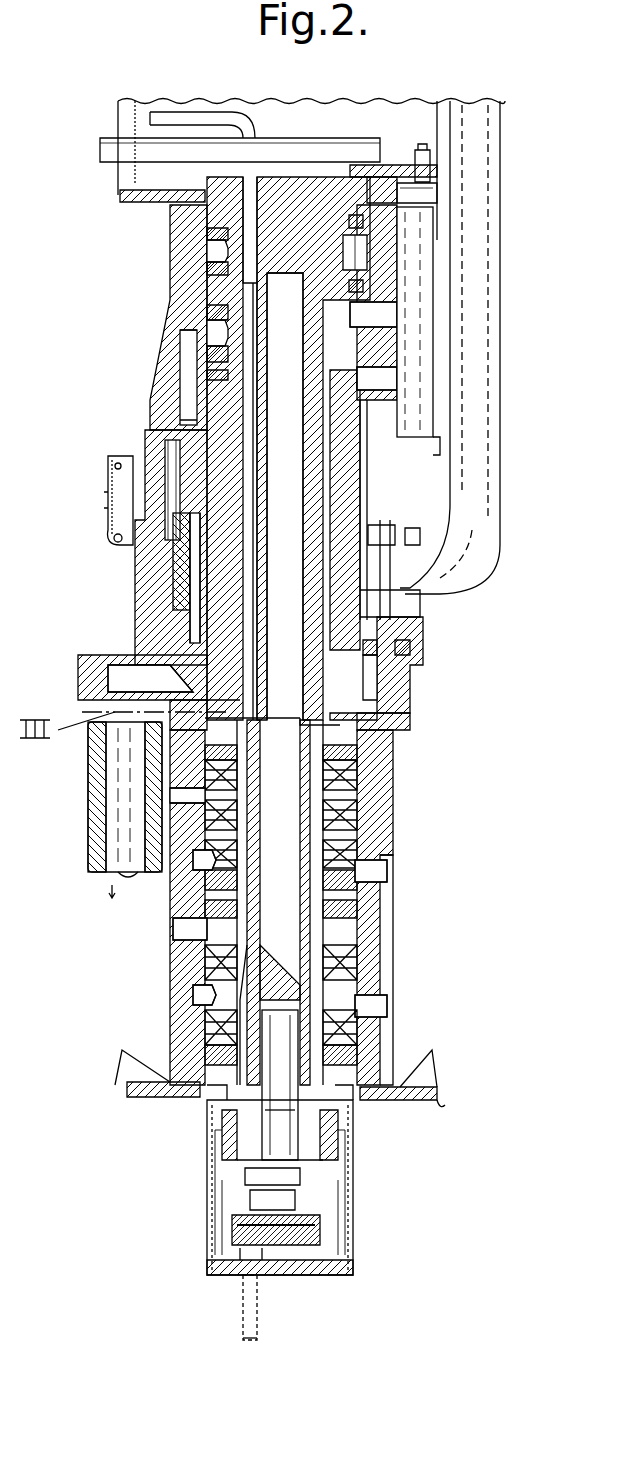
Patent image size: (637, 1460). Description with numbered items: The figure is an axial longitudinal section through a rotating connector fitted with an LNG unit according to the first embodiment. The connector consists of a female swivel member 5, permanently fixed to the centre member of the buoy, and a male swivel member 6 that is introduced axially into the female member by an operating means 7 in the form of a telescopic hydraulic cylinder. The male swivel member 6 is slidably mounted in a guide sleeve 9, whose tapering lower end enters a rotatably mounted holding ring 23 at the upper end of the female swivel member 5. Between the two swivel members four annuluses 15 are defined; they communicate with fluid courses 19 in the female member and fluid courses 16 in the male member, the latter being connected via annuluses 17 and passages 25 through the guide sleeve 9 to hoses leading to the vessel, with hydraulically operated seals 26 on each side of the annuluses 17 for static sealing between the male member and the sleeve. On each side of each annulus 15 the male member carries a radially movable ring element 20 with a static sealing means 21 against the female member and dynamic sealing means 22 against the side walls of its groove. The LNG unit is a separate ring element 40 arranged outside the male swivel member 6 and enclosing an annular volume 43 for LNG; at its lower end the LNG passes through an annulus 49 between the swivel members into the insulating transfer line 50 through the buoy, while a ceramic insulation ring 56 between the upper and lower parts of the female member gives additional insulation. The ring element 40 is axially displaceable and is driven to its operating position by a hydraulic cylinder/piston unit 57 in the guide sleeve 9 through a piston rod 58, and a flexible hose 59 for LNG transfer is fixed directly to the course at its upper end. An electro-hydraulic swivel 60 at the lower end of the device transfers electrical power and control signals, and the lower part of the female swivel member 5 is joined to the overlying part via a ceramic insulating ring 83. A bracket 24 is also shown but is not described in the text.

The female swivel member 5 is at (370, 934).
The male swivel member 6 is at (330, 348).
The operating means 7 is at (425, 283).
The guide sleeve 9 is at (165, 405).
The annuluses 15 is at (200, 866).
The fluid courses 16 is at (318, 808).
The annuluses 17 is at (212, 250).
The fluid courses 19 is at (372, 862).
The ring element 20 is at (355, 898).
The static sealing means 21 is at (200, 1028).
The dynamic sealing means 22 is at (207, 980).
The holding ring 23 is at (145, 565).
The bracket 24 is at (115, 478).
The passages 25 is at (387, 253).
The hydraulically operated seals 26 is at (212, 338).
The ring element 40 is at (178, 600).
The annular volume 43 is at (395, 603).
The annulus 49 is at (390, 690).
The insulating transfer line 50 is at (90, 772).
The ceramic insulation ring 56 is at (380, 716).
The hydraulic cylinder/piston unit 57 is at (185, 375).
The piston rod 58 is at (185, 443).
The flexible hose 59 is at (475, 434).
The electro-hydraulic swivel 60 is at (315, 1147).
The ceramic insulating ring 83 is at (410, 1098).